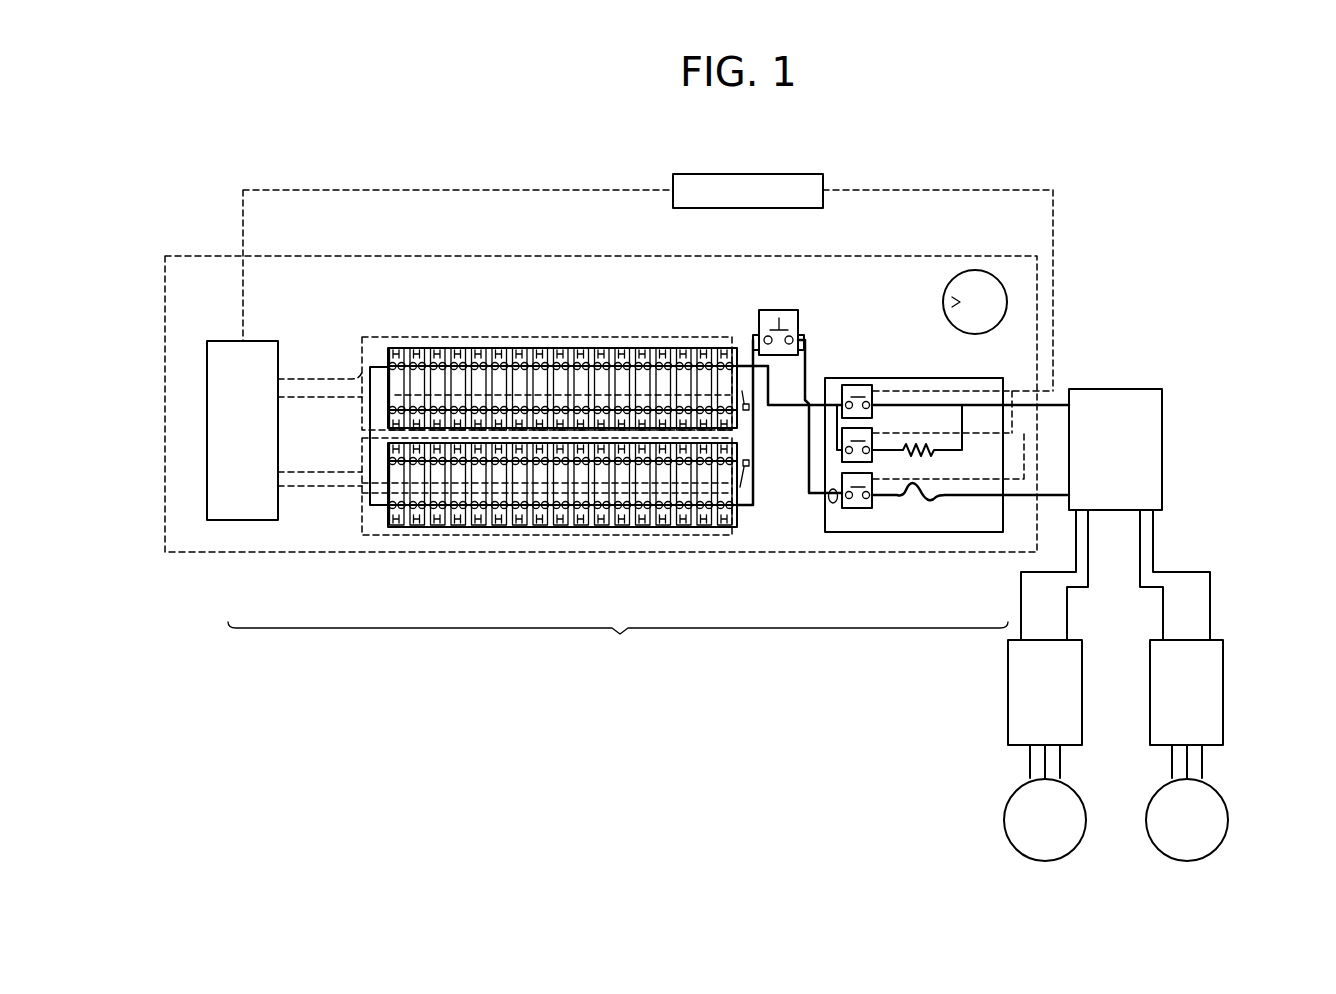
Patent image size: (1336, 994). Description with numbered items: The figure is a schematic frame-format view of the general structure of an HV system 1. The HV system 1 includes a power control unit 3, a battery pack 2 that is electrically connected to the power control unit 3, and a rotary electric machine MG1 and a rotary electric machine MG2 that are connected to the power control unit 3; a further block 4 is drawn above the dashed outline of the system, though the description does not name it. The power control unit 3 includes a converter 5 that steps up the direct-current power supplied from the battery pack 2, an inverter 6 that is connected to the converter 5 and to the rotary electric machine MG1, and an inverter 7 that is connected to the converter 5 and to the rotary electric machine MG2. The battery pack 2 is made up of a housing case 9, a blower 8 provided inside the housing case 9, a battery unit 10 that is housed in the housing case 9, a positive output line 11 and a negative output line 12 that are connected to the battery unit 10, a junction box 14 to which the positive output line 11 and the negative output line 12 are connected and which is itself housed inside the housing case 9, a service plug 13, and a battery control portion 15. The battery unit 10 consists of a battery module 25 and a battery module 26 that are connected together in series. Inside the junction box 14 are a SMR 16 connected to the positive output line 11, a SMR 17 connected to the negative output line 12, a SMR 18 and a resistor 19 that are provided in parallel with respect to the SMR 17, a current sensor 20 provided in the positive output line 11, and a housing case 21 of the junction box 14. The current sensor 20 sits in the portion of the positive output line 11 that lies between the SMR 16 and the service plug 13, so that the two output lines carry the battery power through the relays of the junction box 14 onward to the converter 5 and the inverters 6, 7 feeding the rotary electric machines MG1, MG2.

The HV system 1 is at (609, 186).
The battery pack 2 is at (549, 256).
The power control unit 3 is at (1262, 438).
The controller (ECU) 4 is at (748, 174).
The converter 5 is at (1162, 453).
The inverter 6 is at (1223, 675).
The inverter 7 is at (1083, 657).
The blower 8 is at (975, 334).
The housing case 9 is at (596, 555).
The battery unit 10 is at (533, 488).
The positive output line 11 is at (750, 500).
The negative output line 12 is at (783, 356).
The service plug 13 is at (792, 357).
The junction box 14 is at (968, 597).
The battery control portion 15 is at (243, 520).
The SMR (System Main Relay) 16 is at (861, 512).
The SMR (System Main Relay) 17 is at (873, 413).
The SMR (System Main Relay) 18 is at (873, 455).
The resistor 19 is at (918, 450).
The current sensor 20 is at (836, 510).
The housing case 21 is at (832, 504).
The battery module 25 is at (370, 425).
The battery module 26 is at (392, 516).
The rotary electric machine MG1 is at (1228, 818).
The rotary electric machine MG2 is at (1004, 820).